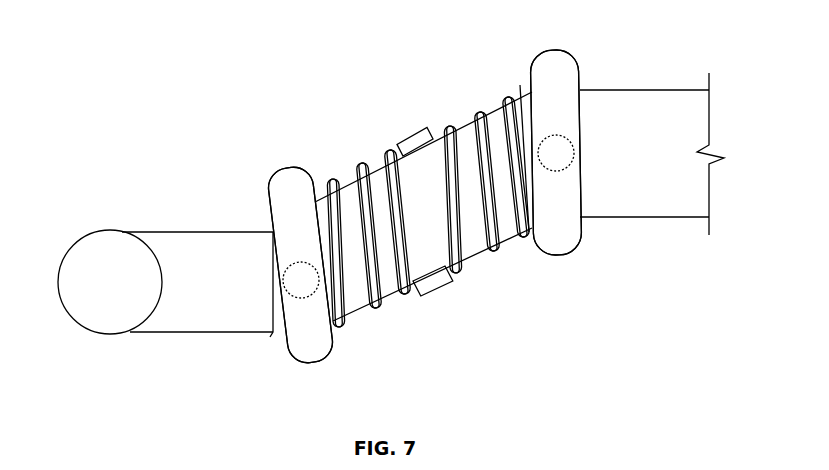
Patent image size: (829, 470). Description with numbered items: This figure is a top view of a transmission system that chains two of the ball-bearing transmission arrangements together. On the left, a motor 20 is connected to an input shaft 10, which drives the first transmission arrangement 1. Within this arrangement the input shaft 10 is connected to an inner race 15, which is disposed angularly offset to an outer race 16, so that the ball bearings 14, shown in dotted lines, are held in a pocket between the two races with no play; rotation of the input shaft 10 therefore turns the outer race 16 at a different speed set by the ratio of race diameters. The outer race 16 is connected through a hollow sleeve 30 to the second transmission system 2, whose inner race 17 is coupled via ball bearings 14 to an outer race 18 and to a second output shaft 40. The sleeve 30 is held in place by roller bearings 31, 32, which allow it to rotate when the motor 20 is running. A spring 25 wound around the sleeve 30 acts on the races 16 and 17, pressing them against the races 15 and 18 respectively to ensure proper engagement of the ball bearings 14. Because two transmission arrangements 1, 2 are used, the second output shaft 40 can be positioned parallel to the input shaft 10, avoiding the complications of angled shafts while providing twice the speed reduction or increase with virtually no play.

The transmission arrangement 1 is at (280, 157).
The second transmission system 2 is at (543, 42).
The input shaft 10 is at (197, 231).
The ball bearings 14 is at (298, 283).
The inner race 15 is at (270, 337).
The outer race 16 is at (312, 370).
The inner race 17 is at (527, 90).
The outer race 18 is at (553, 50).
The motor 20 is at (108, 231).
The spring 25 is at (378, 309).
The hollow sleeve 30 is at (436, 143).
The roller bearing 31 is at (410, 122).
The roller bearing 32 is at (438, 295).
The second output shaft 40 is at (636, 97).